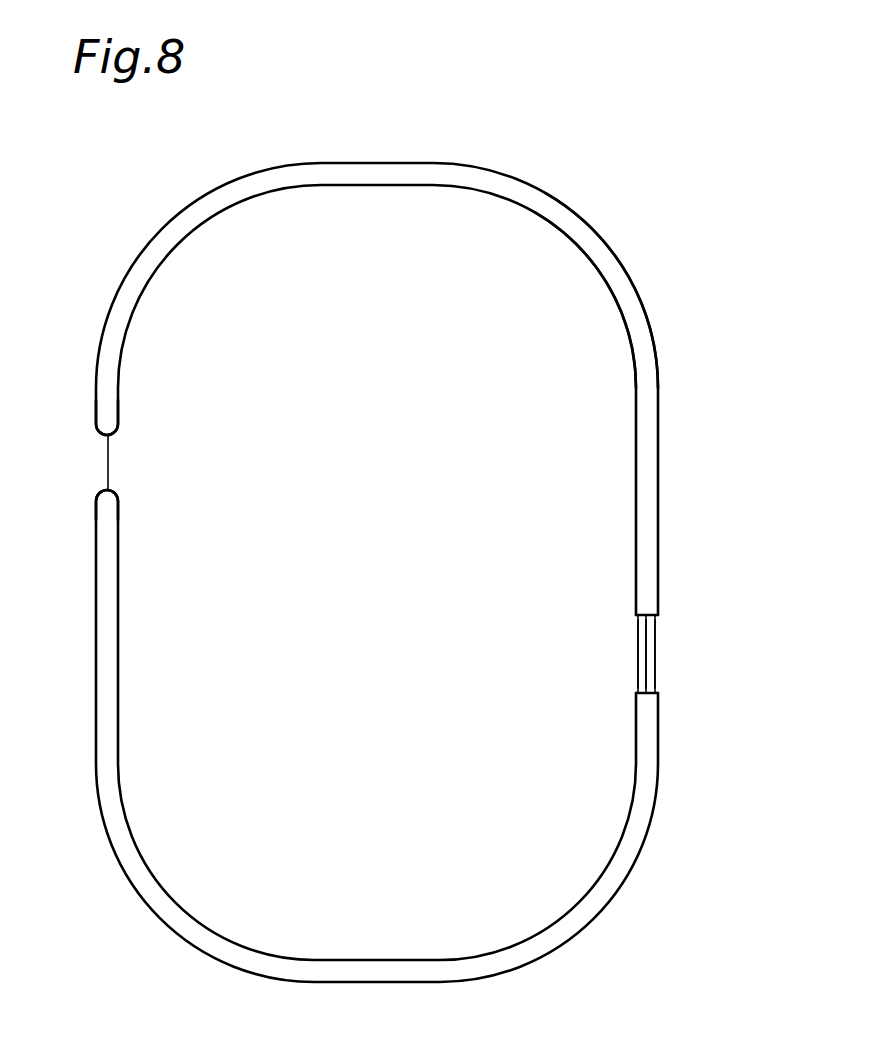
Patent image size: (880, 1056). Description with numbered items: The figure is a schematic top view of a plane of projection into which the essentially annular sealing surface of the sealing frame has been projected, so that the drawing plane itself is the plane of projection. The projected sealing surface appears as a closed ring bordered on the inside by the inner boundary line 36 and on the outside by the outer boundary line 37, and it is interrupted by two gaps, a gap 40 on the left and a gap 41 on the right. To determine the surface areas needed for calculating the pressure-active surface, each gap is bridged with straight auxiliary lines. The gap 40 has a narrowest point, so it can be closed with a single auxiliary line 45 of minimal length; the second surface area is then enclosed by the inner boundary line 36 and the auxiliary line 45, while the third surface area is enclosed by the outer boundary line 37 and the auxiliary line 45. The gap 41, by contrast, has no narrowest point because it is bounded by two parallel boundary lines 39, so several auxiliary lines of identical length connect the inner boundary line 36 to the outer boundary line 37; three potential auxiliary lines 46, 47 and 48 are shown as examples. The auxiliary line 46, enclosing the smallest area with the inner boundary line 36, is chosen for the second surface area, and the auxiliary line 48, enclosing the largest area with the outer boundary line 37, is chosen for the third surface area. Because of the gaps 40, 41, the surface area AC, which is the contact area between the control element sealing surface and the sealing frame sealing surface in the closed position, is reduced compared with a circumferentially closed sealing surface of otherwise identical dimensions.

The inner boundary line 36 is at (612, 292).
The outer boundary line 37 is at (642, 303).
The surface area AC is at (647, 407).
The parallel boundary lines 39 is at (650, 612).
The gap 40 is at (122, 442).
The gap 41 is at (642, 662).
The auxiliary line 45 is at (110, 465).
The auxiliary line 46 is at (633, 638).
The auxiliary line 47 is at (640, 678).
The auxiliary line 48 is at (657, 663).